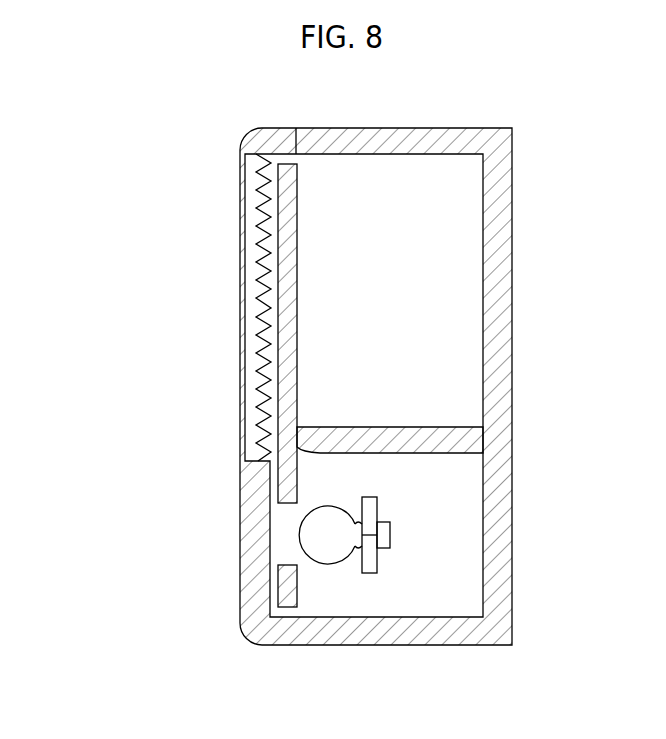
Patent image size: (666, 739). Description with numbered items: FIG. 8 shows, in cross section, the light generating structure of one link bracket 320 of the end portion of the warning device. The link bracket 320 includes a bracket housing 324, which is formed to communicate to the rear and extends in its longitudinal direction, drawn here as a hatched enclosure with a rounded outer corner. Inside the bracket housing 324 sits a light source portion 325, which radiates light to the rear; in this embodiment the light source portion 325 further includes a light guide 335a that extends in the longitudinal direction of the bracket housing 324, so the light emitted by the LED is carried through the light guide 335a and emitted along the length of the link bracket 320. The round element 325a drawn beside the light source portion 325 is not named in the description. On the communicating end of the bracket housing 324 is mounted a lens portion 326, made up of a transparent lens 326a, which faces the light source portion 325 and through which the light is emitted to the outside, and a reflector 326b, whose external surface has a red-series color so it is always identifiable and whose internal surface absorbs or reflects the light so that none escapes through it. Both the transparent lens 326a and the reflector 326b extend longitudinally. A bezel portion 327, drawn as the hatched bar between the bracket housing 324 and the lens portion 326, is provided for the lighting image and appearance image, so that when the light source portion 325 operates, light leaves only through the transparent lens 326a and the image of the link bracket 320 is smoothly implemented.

The link bracket 320 is at (514, 149).
The bracket housing 324 is at (497, 267).
The lens portion 326 is at (88, 392).
The transparent lens 326a is at (246, 521).
The reflector 326b is at (244, 390).
The bezel portion 327 is at (284, 230).
The light guide 335a is at (397, 427).
The light source portion 325 is at (390, 531).
The roller 325a is at (327, 549).